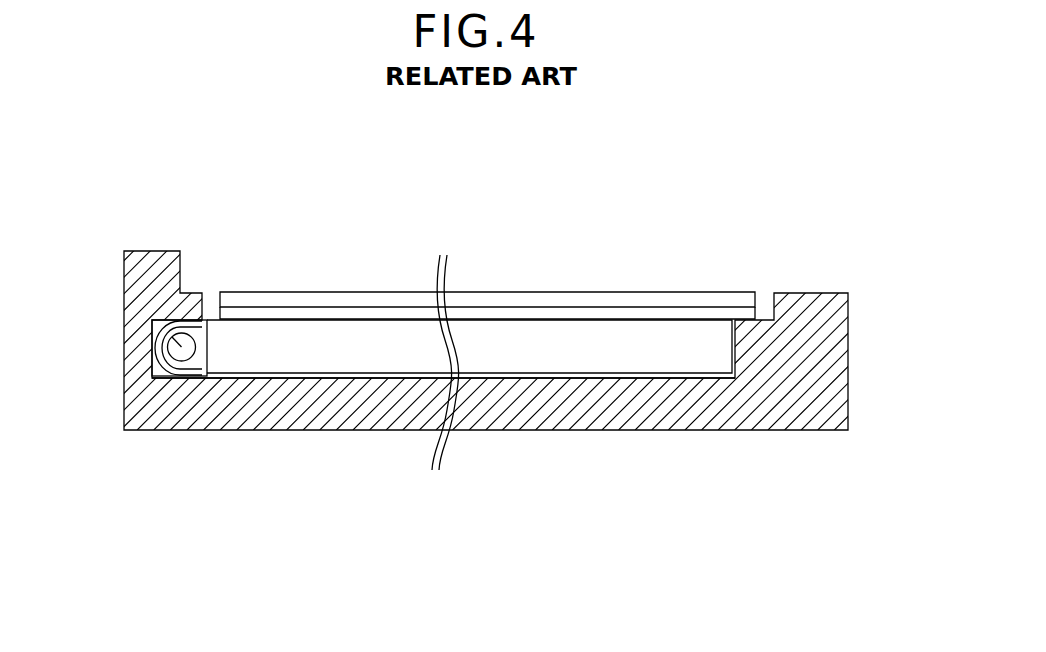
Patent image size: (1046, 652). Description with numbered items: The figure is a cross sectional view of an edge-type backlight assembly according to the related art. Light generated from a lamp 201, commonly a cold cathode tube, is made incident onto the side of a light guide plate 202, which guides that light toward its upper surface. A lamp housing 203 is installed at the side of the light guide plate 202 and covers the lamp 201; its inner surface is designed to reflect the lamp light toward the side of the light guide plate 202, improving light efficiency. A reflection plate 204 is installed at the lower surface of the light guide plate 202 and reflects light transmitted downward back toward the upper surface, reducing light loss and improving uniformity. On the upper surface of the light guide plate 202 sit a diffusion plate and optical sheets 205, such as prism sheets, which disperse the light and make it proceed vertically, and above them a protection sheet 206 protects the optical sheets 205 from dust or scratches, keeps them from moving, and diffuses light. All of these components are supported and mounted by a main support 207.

The lamp 201 is at (165, 333).
The light guide plate 202 is at (717, 350).
The lamp housing 203 is at (152, 373).
The reflection plate 204 is at (713, 378).
The optical sheets 205 is at (330, 317).
The protection sheet 206 is at (404, 300).
The main support 207 is at (153, 267).